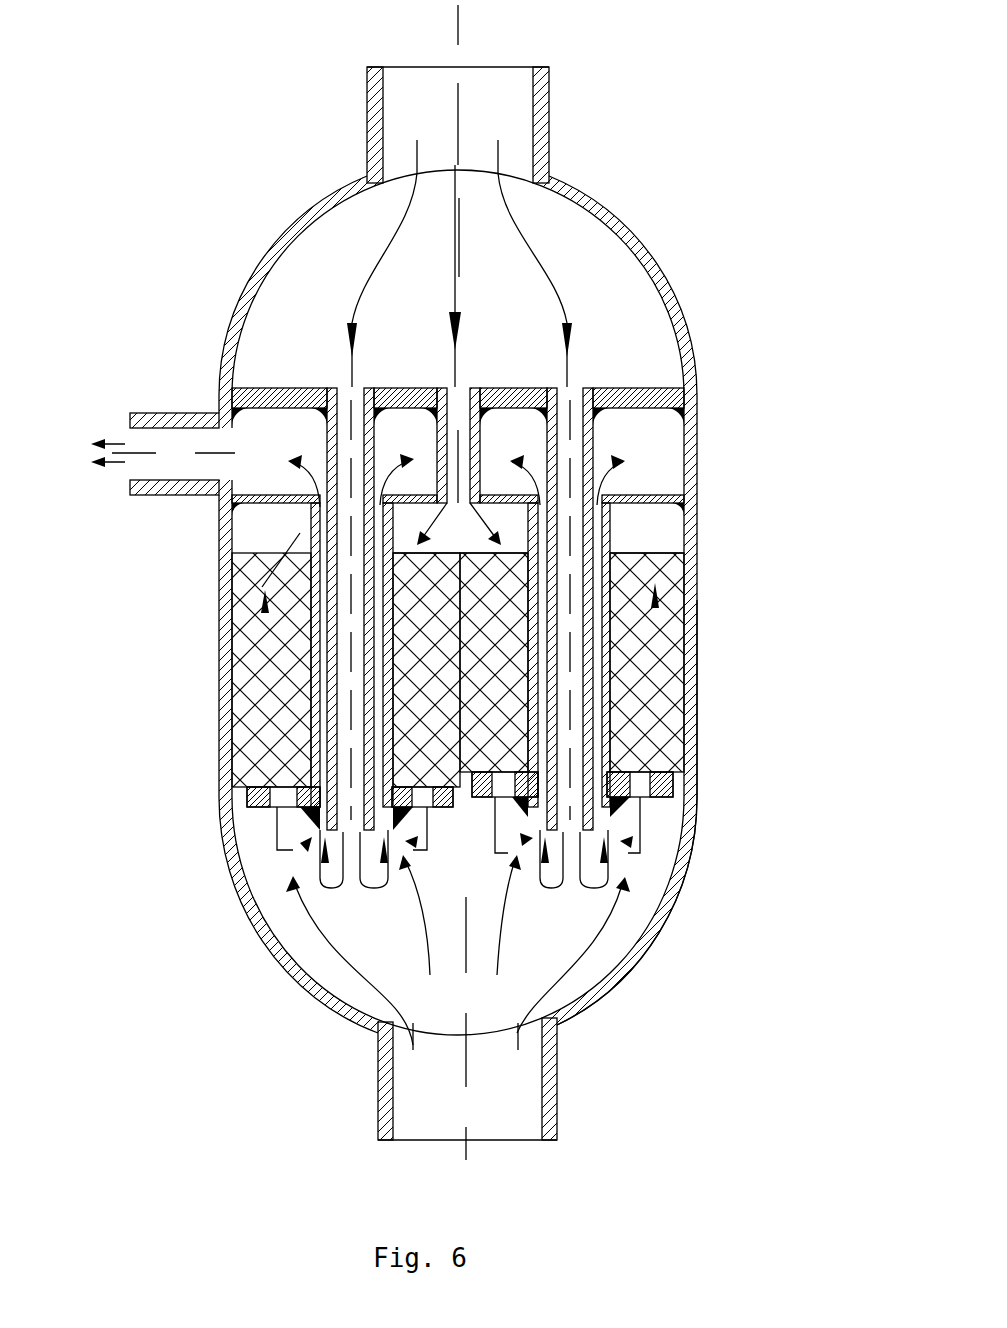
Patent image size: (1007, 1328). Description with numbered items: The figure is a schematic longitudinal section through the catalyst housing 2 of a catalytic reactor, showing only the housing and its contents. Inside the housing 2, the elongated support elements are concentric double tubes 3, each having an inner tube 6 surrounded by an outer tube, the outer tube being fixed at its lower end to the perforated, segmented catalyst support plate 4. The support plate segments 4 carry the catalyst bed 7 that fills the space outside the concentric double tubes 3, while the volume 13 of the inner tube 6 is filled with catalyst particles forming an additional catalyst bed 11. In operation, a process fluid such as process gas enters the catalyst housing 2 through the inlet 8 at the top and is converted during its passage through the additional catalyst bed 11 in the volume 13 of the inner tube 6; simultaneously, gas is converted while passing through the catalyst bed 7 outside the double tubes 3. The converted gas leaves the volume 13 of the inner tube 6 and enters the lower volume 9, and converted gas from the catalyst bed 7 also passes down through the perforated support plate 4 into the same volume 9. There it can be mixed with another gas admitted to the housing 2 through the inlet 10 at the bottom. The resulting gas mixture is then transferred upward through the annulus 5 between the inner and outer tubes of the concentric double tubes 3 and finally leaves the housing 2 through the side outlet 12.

The catalyst housing 2 is at (603, 200).
The concentric double tube 3 is at (697, 775).
The catalyst support plate segment 4 is at (257, 810).
The annulus 5 is at (323, 633).
The inner tube 6 is at (682, 654).
The catalyst bed 7 is at (260, 738).
The inlet 8 is at (510, 122).
The volume 9 is at (405, 972).
The inlet 10 is at (512, 1083).
The additional catalyst bed 11 is at (625, 868).
The outlet 12 is at (184, 461).
The volume of the inner tube 13 is at (600, 513).